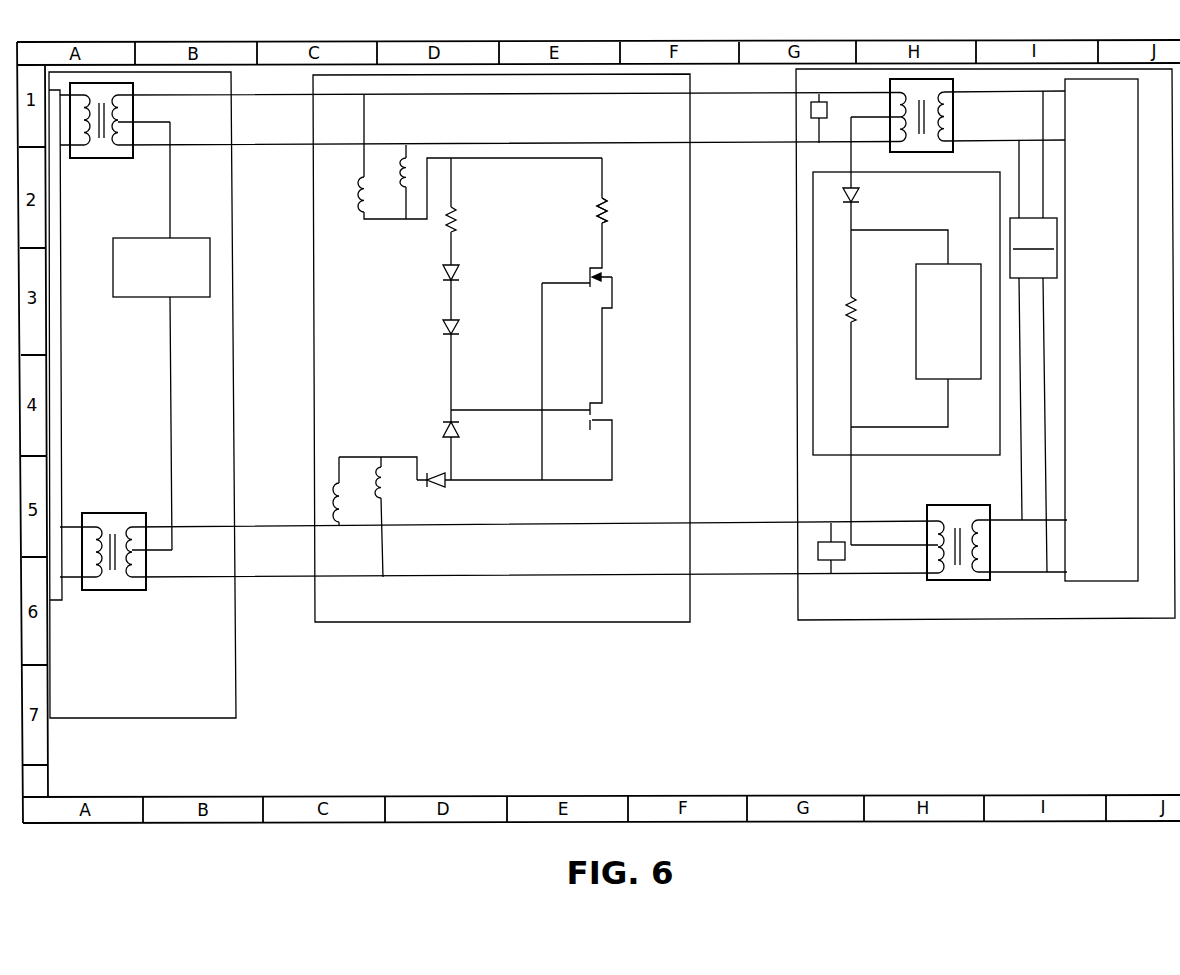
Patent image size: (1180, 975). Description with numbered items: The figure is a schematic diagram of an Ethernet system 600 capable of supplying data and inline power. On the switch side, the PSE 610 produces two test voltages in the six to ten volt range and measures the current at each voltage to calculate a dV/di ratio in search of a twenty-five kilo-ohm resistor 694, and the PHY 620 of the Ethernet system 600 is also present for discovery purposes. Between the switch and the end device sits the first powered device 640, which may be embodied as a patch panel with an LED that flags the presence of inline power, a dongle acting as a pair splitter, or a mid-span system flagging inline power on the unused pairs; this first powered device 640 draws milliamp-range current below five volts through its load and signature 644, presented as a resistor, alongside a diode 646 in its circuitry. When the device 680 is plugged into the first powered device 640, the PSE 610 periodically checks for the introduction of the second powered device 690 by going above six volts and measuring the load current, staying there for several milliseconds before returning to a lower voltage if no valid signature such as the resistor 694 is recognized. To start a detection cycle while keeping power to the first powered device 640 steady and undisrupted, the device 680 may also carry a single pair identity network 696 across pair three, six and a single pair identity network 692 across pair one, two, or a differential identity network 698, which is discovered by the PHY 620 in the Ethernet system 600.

The Ethernet system 600 is at (231, 703).
The PSE 610 is at (143, 299).
The PHY 620 is at (62, 403).
The PD1 640 is at (668, 623).
The load and signature 644 is at (606, 212).
The diode 646 is at (447, 485).
The device 680 is at (796, 585).
The powered device PD2 690 is at (875, 458).
The single pair identity network 692 is at (817, 549).
The 25 kΩ resistor 694 is at (856, 298).
The single pair identity network 696 is at (811, 109).
The differential identity network 698 is at (1033, 331).